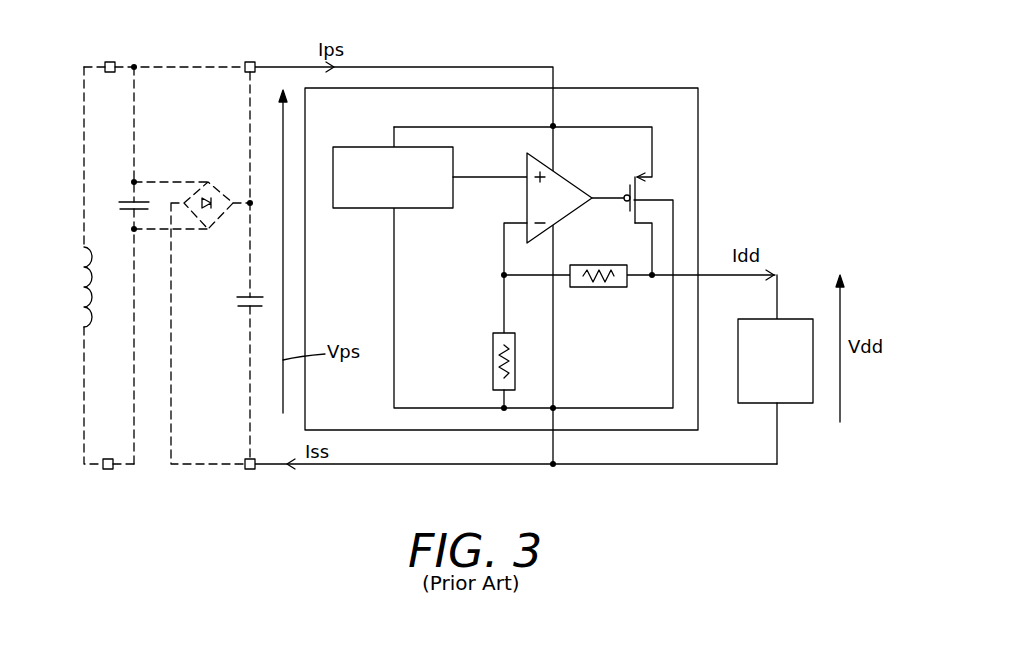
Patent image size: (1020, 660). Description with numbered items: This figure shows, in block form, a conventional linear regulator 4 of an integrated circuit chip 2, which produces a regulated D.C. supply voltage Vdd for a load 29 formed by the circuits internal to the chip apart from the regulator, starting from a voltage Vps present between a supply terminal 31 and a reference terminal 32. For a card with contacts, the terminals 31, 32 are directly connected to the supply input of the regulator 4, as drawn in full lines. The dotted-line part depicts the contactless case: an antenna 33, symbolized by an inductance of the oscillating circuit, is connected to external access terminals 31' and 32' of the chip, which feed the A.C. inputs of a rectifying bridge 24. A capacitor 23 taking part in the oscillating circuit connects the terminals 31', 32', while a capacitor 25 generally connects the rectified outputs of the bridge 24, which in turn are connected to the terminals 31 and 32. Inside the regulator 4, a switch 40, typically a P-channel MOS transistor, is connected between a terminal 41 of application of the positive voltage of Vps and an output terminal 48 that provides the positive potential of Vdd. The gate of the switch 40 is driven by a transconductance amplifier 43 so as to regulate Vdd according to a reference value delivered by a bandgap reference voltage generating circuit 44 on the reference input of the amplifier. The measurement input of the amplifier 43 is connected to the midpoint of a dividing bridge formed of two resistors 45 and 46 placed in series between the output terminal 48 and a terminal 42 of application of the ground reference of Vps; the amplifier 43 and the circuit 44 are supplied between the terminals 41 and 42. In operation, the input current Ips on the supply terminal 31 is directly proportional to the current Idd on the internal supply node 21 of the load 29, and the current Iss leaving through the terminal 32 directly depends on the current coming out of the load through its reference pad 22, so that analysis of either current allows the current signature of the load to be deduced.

The integrated circuit chip 2 is at (361, 481).
The linear regulator 4 is at (710, 86).
The internal supply node 21 is at (778, 290).
The reference pad 22 is at (777, 455).
The capacitor 23 is at (122, 200).
The rectifying bridge 24 is at (223, 193).
The capacitor 25 is at (245, 306).
The load 29 is at (762, 319).
The supply terminal 31 is at (275, 47).
The external access terminal 31' is at (140, 47).
The reference terminal 32 is at (220, 490).
The external access terminal 32' is at (84, 487).
The antenna 33 is at (90, 312).
The switch 40 is at (650, 189).
The positive voltage terminal 41 is at (555, 124).
The reference voltage terminal 42 is at (555, 407).
The transconductance amplifier 43 is at (560, 175).
The reference voltage generating circuit 44 is at (420, 208).
The resistor 45 is at (590, 287).
The resistor 46 is at (492, 334).
The output terminal 48 is at (688, 265).